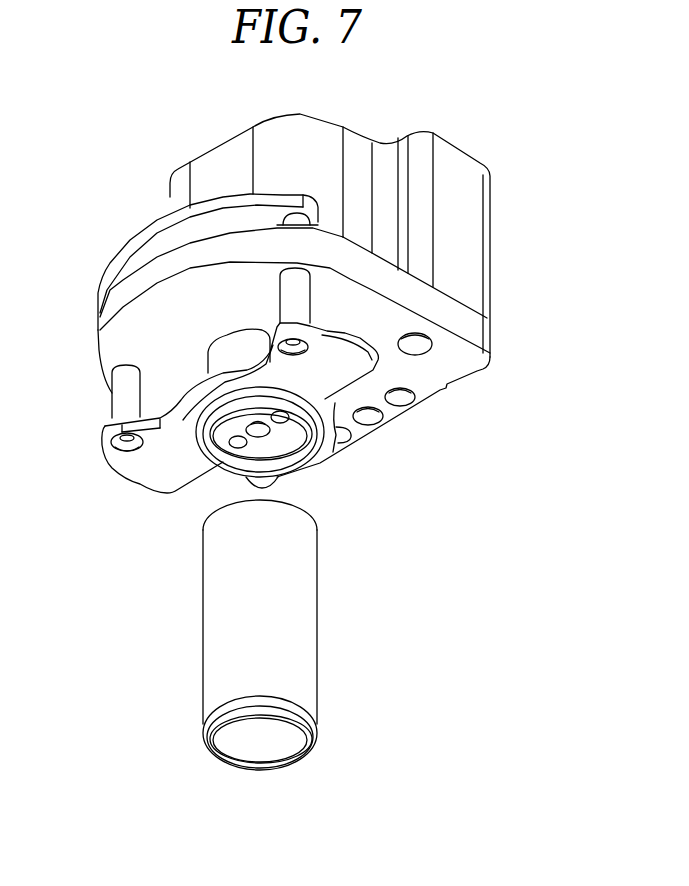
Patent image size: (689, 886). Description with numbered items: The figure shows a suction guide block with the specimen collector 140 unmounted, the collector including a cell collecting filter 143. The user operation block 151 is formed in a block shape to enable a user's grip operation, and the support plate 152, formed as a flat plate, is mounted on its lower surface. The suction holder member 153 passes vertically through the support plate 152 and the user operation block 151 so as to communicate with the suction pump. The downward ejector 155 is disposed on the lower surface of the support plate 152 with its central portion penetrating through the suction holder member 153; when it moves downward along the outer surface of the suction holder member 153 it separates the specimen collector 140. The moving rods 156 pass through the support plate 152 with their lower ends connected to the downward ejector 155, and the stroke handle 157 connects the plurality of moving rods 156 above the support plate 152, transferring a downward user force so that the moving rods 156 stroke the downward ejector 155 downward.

The specimen collector 140 is at (318, 622).
The cell collecting filter 143 is at (277, 742).
The user operation block 151 is at (470, 236).
The support plate 152 is at (468, 328).
The suction holder member 153 is at (230, 352).
The downward ejector 155 is at (157, 470).
The moving rod 156 is at (288, 302).
The stroke handle 157 is at (147, 225).